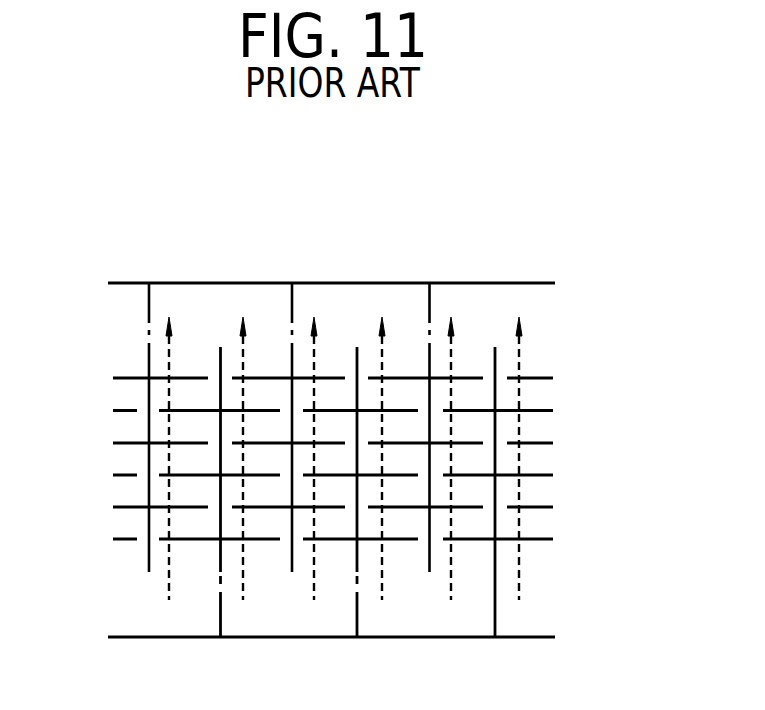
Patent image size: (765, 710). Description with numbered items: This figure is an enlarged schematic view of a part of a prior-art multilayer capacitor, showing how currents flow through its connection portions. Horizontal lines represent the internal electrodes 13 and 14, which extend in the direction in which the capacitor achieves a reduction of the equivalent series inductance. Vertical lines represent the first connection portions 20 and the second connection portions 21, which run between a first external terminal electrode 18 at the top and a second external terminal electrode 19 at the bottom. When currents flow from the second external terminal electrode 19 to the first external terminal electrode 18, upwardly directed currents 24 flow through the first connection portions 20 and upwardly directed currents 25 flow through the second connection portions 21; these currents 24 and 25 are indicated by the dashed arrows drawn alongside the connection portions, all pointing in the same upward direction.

The internal electrode 13 is at (545, 378).
The internal electrode 14 is at (545, 411).
The first external terminal electrode 18 is at (121, 283).
The second external terminal electrode 19 is at (125, 637).
The first connection portion 20 is at (149, 295).
The second connection portion 21 is at (220, 618).
The current 24 is at (172, 352).
The current 25 is at (243, 352).